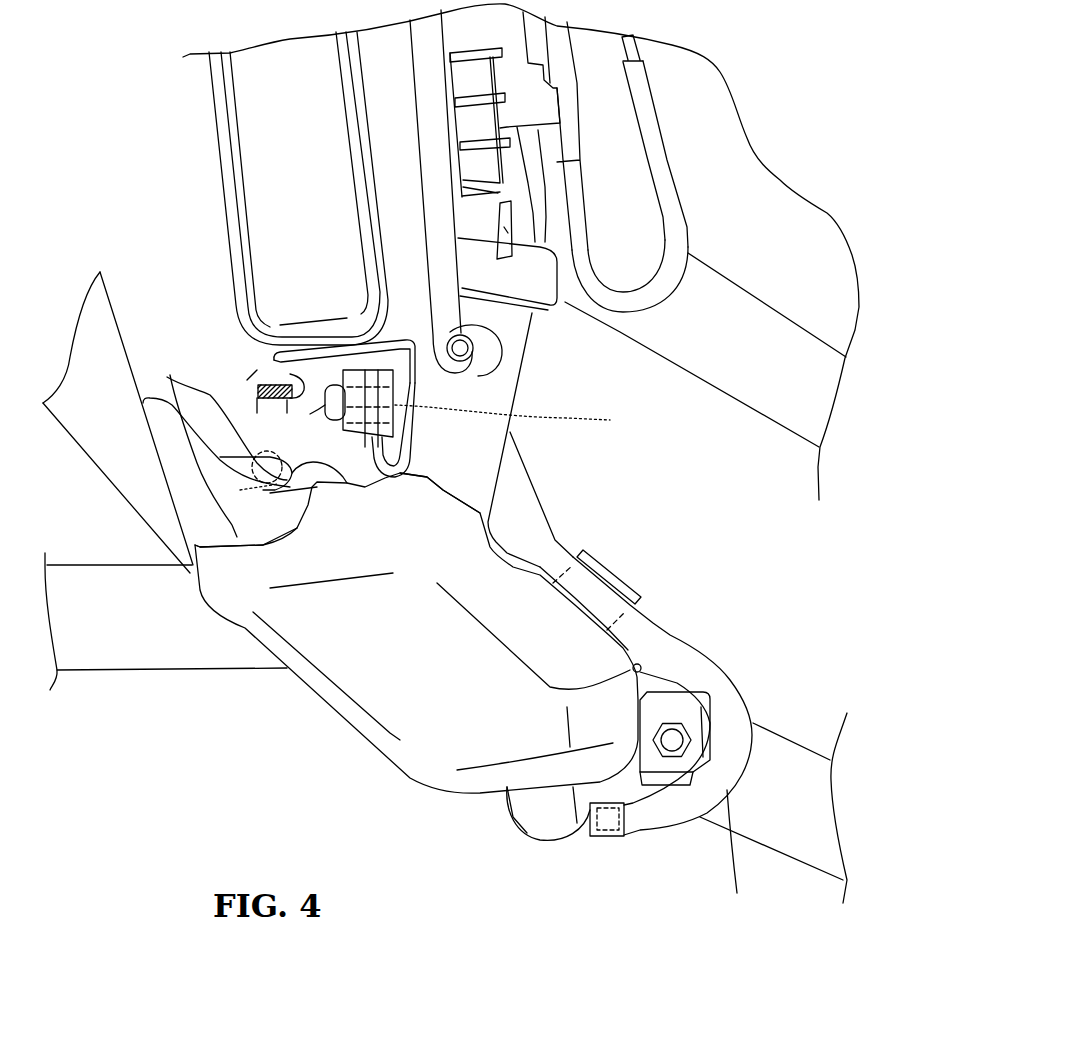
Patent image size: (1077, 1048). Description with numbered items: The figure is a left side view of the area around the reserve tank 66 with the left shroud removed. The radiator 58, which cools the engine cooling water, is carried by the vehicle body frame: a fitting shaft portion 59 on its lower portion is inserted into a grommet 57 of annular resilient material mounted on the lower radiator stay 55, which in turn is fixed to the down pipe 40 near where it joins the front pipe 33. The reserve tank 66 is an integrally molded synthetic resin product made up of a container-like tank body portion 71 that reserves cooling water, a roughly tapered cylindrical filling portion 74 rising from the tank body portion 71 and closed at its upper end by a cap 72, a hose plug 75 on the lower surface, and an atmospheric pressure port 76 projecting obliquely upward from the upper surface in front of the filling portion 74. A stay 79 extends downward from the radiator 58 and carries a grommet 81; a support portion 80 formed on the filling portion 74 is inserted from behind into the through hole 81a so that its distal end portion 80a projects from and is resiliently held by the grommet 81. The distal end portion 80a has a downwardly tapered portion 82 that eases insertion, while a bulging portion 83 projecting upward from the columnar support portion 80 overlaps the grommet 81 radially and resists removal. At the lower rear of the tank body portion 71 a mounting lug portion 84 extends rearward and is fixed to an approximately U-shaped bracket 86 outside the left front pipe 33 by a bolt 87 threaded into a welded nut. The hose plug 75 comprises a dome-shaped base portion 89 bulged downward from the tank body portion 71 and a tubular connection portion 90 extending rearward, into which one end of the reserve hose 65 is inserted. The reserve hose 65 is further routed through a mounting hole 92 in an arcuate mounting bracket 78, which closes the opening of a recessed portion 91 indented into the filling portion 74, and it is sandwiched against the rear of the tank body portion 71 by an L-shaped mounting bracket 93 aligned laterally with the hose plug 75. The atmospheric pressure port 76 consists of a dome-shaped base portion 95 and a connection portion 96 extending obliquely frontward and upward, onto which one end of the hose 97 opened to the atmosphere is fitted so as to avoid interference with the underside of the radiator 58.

The front pipe 33 is at (797, 843).
The down pipe 40 is at (103, 307).
The radiator stay 55 is at (258, 385).
The grommet 57 is at (287, 373).
The radiator 58 is at (218, 205).
The fitting shaft portion 59 is at (315, 447).
The reserve hose 65 is at (707, 650).
The reserve tank 66 is at (344, 746).
The tank body portion 71 is at (368, 662).
The cap 72 is at (568, 302).
The filling portion 74 is at (531, 370).
The hose plug 75 is at (533, 848).
The atmospheric pressure port 76 is at (332, 456).
The mounting bracket 78 is at (428, 336).
The stay 79 is at (427, 477).
The support portion 80 is at (405, 340).
The distal end portion 80a is at (320, 402).
The grommet 81 is at (397, 462).
The through hole 81a is at (524, 418).
The tapered portion 82 is at (310, 414).
The bulging portion 83 is at (325, 350).
The mounting lug portion 84 is at (738, 855).
The bracket 86 is at (700, 708).
The bolt 87 is at (680, 741).
The base portion 89 is at (523, 818).
The connection portion 90 is at (580, 838).
The recessed portion 91 is at (472, 360).
The mounting hole 92 is at (474, 340).
The mounting bracket 93 is at (618, 578).
The base portion 95 is at (195, 545).
The connection portion 96 is at (240, 490).
The hose 97 is at (173, 390).